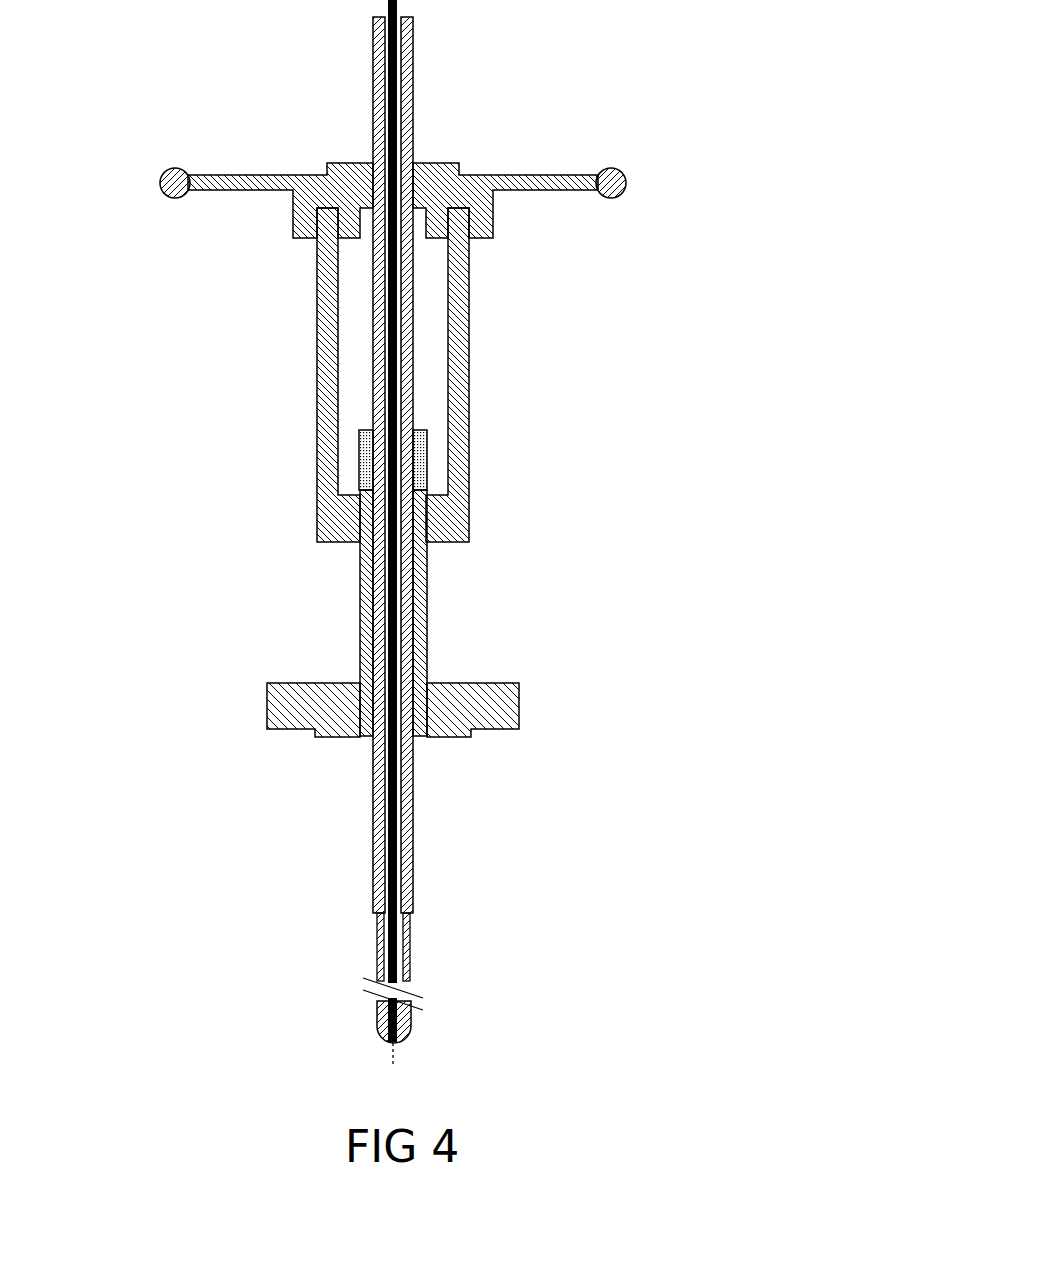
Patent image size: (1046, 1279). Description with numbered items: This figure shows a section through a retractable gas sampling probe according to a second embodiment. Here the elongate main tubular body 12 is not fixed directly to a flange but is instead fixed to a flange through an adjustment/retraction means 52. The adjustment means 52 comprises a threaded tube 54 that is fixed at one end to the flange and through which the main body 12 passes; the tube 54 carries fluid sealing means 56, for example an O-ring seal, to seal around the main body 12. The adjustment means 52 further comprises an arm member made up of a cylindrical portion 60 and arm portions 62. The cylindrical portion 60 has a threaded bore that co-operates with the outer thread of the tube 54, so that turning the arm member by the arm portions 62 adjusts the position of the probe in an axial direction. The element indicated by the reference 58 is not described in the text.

The main body 12 is at (373, 826).
The adjustment/retraction means 52 is at (273, 453).
The threaded tube 54 is at (427, 618).
The fluid sealing means 56 is at (427, 448).
The mounting assembly 58 is at (527, 373).
The cylindrical portion 60 is at (470, 292).
The arm portions 62 is at (578, 172).